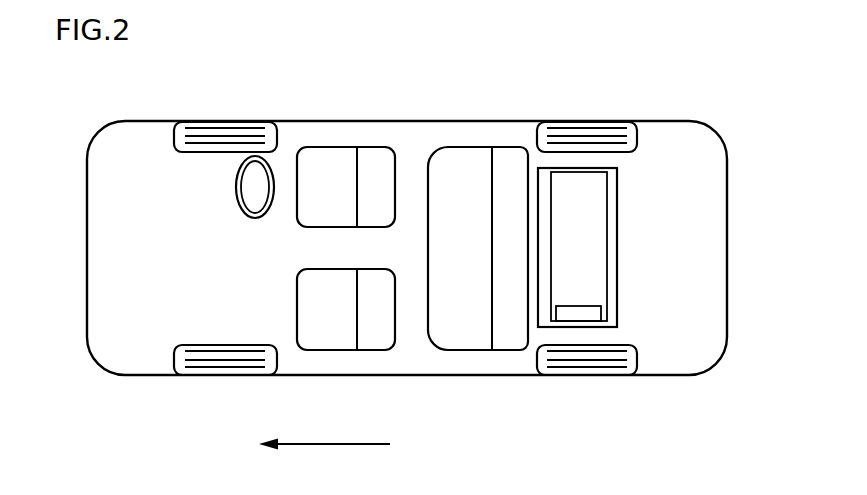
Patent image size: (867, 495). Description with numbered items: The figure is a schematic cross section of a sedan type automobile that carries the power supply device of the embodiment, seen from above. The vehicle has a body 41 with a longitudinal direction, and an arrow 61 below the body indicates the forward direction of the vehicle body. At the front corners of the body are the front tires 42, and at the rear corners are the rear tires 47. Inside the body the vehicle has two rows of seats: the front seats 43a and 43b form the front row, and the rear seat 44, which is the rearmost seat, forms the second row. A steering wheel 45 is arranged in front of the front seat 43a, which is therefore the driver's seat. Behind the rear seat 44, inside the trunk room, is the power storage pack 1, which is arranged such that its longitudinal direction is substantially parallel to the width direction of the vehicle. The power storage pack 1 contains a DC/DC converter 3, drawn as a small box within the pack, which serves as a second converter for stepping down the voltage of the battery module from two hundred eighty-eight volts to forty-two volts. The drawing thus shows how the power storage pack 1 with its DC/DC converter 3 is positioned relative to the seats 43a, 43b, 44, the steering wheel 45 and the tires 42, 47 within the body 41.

The power storage pack 1 is at (588, 257).
The DC/DC converter 3 is at (579, 316).
The body 41 is at (379, 119).
The tires 42 is at (212, 133).
The front seat 43a is at (328, 163).
The front seat 43b is at (329, 330).
The rear seat 44 is at (463, 330).
The steering wheel 45 is at (255, 157).
The tires 47 is at (588, 133).
The arrow 61 is at (325, 450).